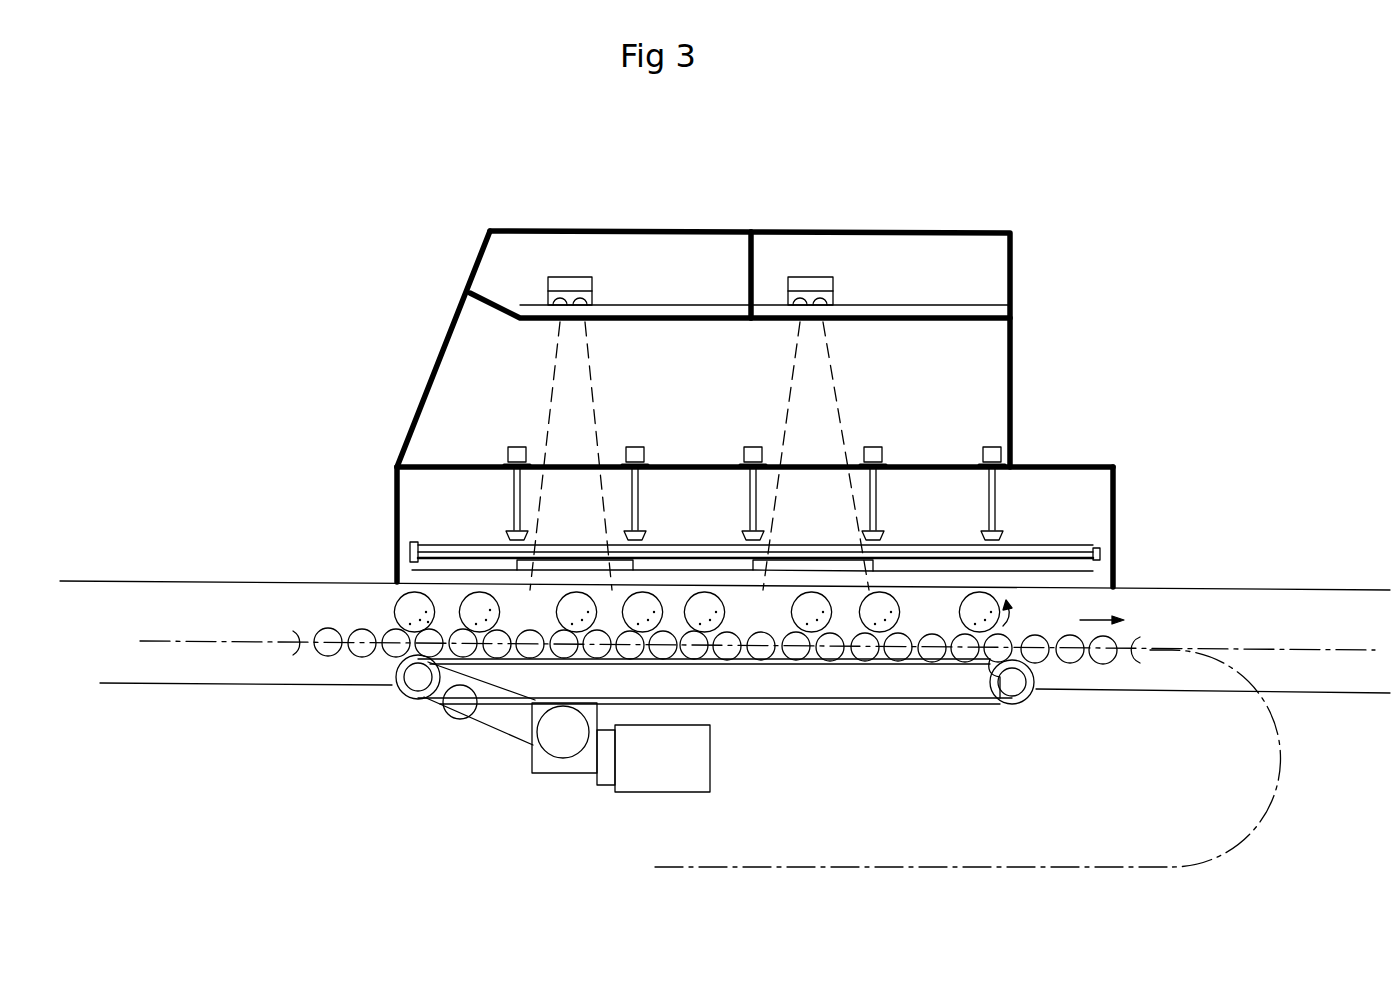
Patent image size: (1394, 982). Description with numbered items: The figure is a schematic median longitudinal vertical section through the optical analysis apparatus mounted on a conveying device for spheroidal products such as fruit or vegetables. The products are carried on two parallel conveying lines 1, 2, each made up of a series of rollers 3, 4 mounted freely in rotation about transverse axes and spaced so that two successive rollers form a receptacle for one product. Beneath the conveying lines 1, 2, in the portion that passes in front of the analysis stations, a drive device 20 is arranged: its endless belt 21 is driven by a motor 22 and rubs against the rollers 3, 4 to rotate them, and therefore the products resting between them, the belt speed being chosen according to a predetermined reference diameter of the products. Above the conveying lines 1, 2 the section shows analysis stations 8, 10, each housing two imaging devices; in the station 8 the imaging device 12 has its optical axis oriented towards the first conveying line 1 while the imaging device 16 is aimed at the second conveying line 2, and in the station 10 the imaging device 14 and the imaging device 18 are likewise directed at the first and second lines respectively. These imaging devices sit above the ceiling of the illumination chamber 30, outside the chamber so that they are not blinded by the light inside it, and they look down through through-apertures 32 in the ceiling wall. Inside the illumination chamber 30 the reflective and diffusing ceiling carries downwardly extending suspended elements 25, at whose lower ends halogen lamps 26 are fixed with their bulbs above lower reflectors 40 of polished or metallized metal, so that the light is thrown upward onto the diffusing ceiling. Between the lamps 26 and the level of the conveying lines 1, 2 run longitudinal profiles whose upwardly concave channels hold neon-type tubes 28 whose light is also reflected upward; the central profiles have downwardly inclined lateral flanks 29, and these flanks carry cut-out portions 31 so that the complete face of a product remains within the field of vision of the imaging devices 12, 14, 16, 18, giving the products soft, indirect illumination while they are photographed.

The conveying line 1 is at (593, 669).
The conveying line 2 is at (277, 667).
The roller 3 is at (716, 687).
The roller 4 is at (362, 655).
The analysis station 8 is at (641, 214).
The analysis station 10 is at (909, 212).
The imaging device 12 is at (661, 383).
The imaging device 14 is at (914, 383).
The imaging device 16 is at (578, 285).
The imaging device 18 is at (822, 285).
The drive device 20 is at (930, 718).
The endless belt 21 is at (965, 692).
The motor 22 is at (630, 780).
The suspended element 25 is at (520, 498).
The halogen lamp 26 is at (633, 535).
The neon-type tube 28 is at (1047, 552).
The lateral flank 29 is at (1065, 565).
The illumination chamber 30 is at (437, 487).
The cut-out portion 31 is at (900, 573).
The through-aperture 32 is at (612, 455).
The lower reflector 40 is at (605, 550).